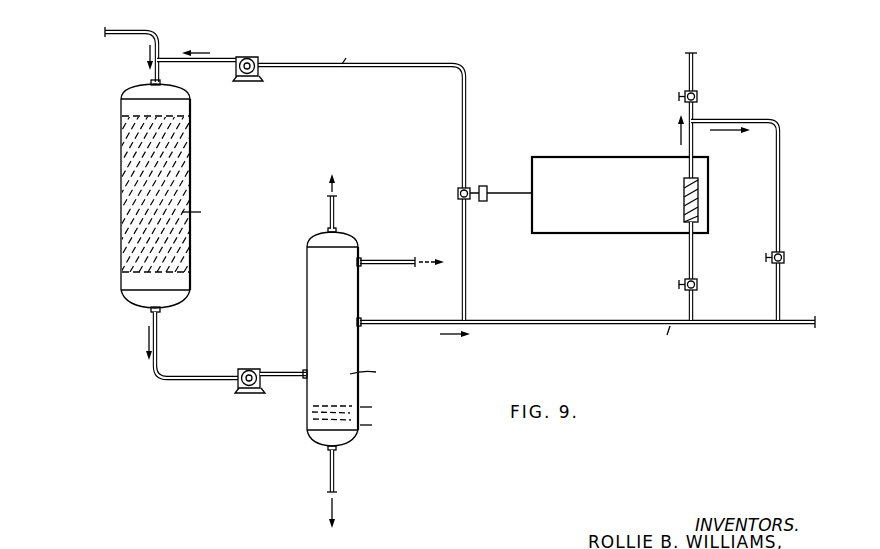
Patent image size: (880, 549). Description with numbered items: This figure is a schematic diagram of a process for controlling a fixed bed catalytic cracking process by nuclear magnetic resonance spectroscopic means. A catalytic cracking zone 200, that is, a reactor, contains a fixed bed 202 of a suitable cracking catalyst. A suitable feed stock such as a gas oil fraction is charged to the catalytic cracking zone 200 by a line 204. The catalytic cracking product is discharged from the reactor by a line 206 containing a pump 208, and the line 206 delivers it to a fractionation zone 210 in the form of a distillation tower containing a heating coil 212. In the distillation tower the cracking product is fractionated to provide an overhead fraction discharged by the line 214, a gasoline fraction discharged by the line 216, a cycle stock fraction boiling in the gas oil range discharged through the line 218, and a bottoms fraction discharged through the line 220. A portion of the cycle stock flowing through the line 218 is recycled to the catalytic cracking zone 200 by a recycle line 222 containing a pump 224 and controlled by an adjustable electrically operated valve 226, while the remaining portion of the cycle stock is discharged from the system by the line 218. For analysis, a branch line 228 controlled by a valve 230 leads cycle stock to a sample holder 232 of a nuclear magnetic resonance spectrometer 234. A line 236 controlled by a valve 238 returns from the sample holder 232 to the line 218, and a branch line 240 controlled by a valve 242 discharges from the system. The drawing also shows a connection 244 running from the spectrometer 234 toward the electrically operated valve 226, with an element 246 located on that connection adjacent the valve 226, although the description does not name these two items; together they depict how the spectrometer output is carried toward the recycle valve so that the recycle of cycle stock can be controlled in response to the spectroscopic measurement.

The catalytic cracking zone 200 is at (121, 126).
The fixed bed 202 is at (157, 194).
The line 204 is at (143, 22).
The line 206 is at (194, 376).
The pump 208 is at (247, 368).
The fractionation zone 210 is at (348, 352).
The heating coil 212 is at (307, 416).
The line 214 is at (337, 203).
The line 216 is at (396, 265).
The line 218 is at (568, 320).
The line 220 is at (336, 475).
The recycle line 222 is at (467, 101).
The pump 224 is at (251, 57).
The adjustable electrically operated valve 226 is at (457, 195).
The branch line 228 is at (688, 257).
The valve 230 is at (698, 285).
The sample holder 232 is at (700, 200).
The nuclear magnetic resonance spectrometer 234 is at (576, 150).
The line 236 is at (773, 119).
The valve 238 is at (786, 258).
The branch line 240 is at (688, 77).
The valve 242 is at (698, 97).
The signal line 244 is at (509, 195).
The controller 246 is at (484, 185).